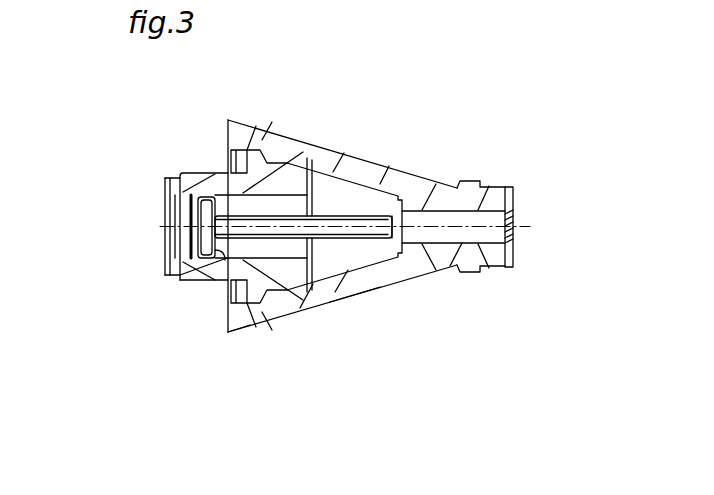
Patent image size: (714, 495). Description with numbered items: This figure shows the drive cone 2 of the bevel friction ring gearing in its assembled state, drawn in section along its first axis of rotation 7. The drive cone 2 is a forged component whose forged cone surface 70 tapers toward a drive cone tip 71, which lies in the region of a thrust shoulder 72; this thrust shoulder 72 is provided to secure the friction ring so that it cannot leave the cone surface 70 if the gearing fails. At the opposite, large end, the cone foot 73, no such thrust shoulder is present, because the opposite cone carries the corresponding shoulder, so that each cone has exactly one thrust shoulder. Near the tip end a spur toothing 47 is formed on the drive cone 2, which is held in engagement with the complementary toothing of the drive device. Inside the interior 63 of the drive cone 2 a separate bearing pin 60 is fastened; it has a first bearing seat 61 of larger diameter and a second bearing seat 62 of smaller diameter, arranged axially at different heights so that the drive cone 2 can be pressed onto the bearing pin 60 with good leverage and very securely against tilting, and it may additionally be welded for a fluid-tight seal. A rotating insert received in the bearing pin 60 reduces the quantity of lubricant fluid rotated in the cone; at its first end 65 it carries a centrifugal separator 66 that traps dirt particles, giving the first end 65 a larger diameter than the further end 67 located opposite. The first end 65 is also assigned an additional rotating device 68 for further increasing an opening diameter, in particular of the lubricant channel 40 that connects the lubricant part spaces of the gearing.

The drive cone 2 is at (415, 177).
The first axis of rotation 7 is at (446, 232).
The lubricant channel 40 is at (284, 215).
The spur toothing 47 is at (515, 192).
The separate bearing pin 60 is at (206, 175).
The first bearing seat 61 is at (250, 305).
The second bearing seat 62 is at (298, 297).
The interior 63 is at (331, 192).
The first end 65 is at (167, 169).
The centrifugal separator 66 is at (218, 282).
The further end 67 is at (390, 208).
The additional rotating device 68 is at (167, 274).
The forged cone surface 70 is at (358, 297).
The drive cone tip 71 is at (505, 295).
The thrust shoulder 72 is at (461, 180).
The cone foot 73 is at (226, 352).